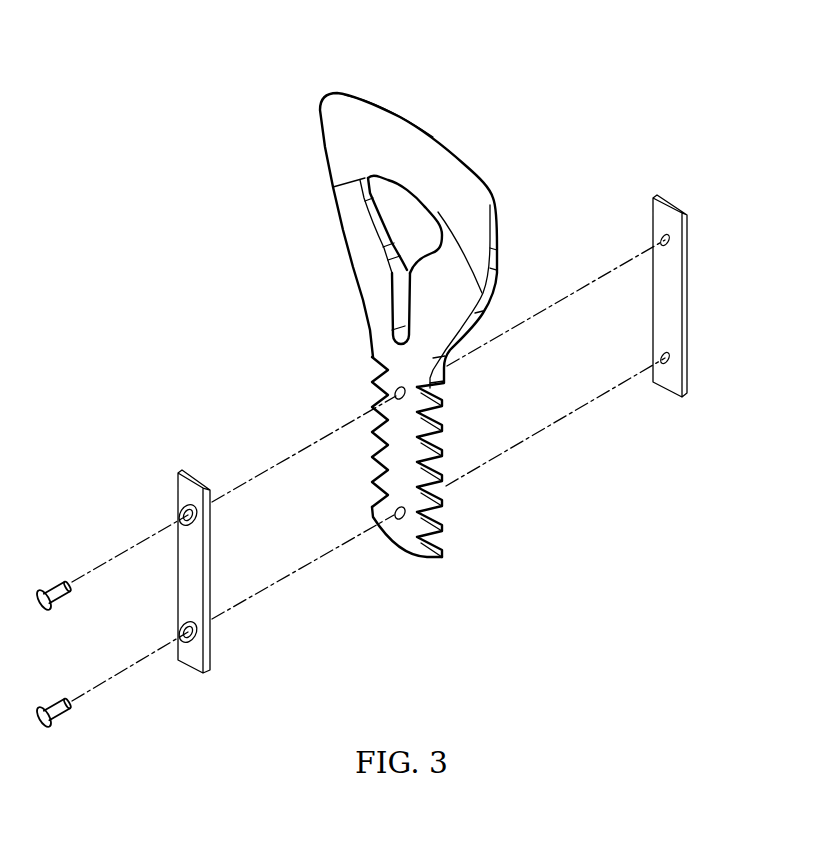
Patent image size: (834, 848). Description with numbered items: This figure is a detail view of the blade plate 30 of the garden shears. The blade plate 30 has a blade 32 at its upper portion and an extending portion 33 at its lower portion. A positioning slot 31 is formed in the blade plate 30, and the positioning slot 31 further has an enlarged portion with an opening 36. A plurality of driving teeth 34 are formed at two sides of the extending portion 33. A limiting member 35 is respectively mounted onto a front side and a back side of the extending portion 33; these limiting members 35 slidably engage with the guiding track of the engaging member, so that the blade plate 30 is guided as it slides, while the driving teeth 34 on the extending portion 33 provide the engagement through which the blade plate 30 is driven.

The blade plate 30 is at (318, 166).
The positioning slot 31 is at (398, 292).
The blade 32 is at (417, 133).
The extending portion 33 is at (400, 438).
The driving teeth 34 is at (380, 473).
The limiting member 35 is at (670, 302).
The opening 36 is at (423, 223).